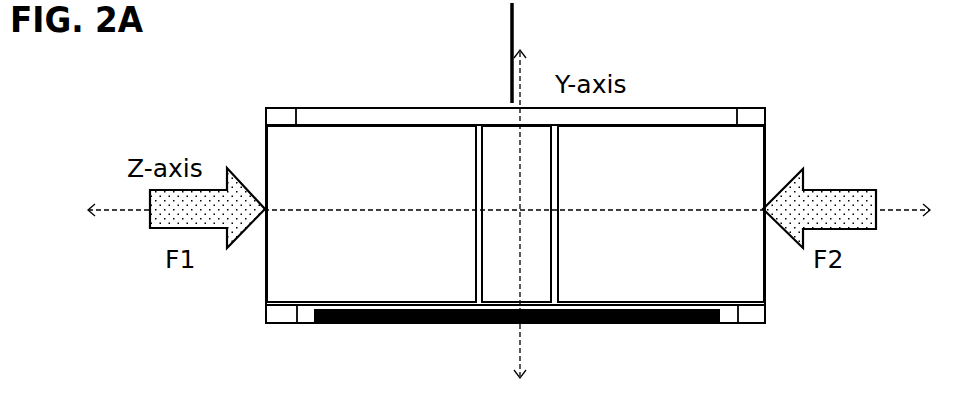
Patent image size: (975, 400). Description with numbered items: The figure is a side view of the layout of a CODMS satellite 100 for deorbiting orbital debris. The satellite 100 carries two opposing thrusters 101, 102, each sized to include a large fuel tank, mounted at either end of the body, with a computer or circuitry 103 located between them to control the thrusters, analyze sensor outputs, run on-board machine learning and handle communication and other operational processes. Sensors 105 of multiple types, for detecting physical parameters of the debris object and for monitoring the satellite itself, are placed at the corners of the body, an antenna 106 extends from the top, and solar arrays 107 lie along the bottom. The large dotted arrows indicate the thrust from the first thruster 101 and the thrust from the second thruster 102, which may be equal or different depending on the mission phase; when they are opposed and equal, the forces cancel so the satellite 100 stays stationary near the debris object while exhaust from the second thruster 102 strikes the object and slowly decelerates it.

The CODMS satellite 100 is at (268, 108).
The first thruster 101 is at (371, 214).
The second thruster 102 is at (661, 214).
The computer or circuitry 103 is at (516, 214).
The sensors 105 is at (283, 117).
The antenna 106 is at (543, 53).
The solar arrays 107 is at (465, 323).